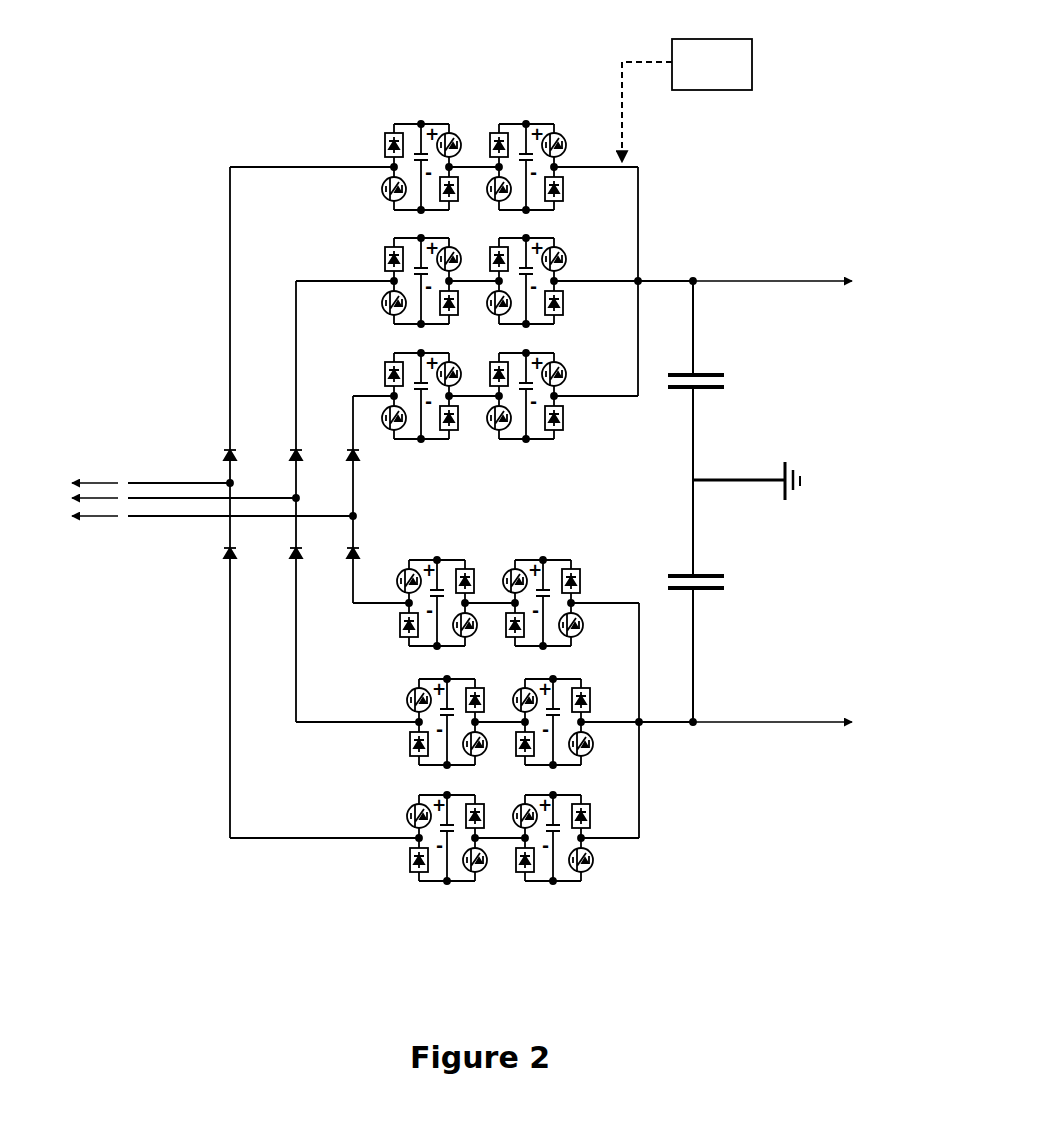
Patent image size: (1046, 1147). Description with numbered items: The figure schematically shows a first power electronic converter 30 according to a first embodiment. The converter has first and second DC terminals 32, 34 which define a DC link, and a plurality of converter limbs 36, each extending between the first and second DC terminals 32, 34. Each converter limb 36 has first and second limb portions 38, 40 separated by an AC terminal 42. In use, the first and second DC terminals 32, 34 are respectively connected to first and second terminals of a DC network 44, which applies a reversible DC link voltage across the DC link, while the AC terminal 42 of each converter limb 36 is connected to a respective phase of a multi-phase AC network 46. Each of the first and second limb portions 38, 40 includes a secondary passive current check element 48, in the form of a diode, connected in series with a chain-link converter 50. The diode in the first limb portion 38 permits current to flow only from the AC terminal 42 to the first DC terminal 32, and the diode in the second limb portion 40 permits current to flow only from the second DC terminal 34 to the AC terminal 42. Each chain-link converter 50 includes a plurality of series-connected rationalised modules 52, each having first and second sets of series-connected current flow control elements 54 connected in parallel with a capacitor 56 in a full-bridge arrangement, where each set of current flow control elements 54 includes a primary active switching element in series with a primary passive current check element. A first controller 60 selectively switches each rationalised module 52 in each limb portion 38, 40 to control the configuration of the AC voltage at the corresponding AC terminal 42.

The first power electronic converter 30 is at (266, 128).
The first DC terminal 32 is at (697, 285).
The second DC terminal 34 is at (698, 717).
The converter limb 36 is at (622, 392).
The first limb portion 38 is at (330, 365).
The second limb portion 40 is at (330, 645).
The AC terminal 42 is at (227, 481).
The DC network 44 is at (791, 501).
The multi-phase AC network 46 is at (76, 499).
The secondary passive current check element 48 is at (350, 449).
The chain-link converter 50 is at (473, 404).
The rationalised module 52 is at (430, 418).
The current flow control element 54 is at (393, 121).
The capacitor 56 is at (415, 152).
The first controller 60 is at (687, 100).